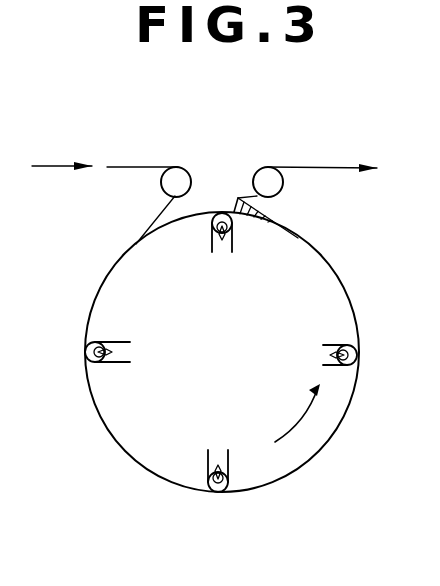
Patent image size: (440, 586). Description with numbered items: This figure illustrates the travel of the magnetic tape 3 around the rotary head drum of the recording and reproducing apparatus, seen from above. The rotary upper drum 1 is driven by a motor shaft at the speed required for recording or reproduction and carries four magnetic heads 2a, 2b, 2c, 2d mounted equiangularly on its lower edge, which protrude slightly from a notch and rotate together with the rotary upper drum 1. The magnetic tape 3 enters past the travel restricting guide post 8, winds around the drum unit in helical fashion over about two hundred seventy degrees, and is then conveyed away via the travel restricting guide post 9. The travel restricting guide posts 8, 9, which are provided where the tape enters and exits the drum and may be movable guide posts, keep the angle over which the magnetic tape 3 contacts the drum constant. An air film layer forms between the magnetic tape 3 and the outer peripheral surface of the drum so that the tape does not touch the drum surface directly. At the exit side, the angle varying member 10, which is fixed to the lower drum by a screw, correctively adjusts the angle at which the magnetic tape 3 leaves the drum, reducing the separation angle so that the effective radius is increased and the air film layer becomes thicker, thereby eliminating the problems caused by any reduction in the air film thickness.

The rotary upper drum 1 is at (158, 432).
The magnetic head 2a is at (236, 486).
The magnetic head 2b is at (343, 372).
The magnetic head 2c is at (240, 232).
The magnetic head 2d is at (108, 331).
The magnetic tape 3 is at (314, 167).
The travel restricting guide post 8 is at (177, 178).
The travel restricting guide post 9 is at (267, 183).
The angle varying member 10 is at (238, 199).